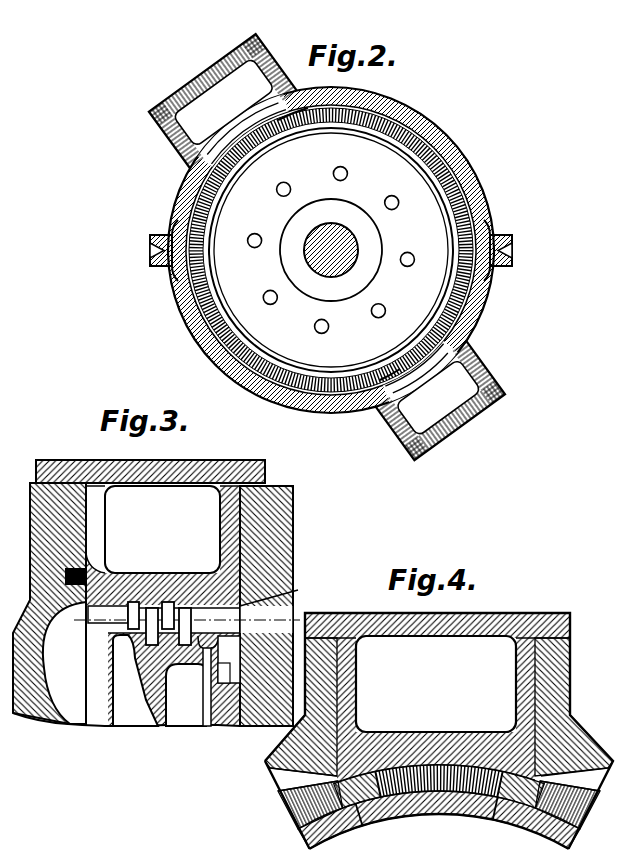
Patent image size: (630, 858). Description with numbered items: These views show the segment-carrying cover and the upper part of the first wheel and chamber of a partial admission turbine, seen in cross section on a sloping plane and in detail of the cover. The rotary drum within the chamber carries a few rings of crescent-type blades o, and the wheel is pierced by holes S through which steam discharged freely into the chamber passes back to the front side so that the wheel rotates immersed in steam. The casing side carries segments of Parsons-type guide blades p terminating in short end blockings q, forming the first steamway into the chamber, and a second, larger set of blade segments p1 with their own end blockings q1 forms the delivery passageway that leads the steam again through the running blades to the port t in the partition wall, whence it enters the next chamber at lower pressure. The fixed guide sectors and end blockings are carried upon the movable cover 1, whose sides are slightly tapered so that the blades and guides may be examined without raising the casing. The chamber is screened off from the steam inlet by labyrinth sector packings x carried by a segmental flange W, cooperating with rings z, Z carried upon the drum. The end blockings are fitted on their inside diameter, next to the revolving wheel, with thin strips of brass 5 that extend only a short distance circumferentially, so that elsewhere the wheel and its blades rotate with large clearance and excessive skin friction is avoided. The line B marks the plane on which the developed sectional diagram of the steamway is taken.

In FIG. 2, the movable cover 1 is at (207, 64).
In FIG. 3, the movable cover 1 is at (148, 466).
In FIG. 4, the movable cover 1 is at (517, 685).
In FIG. 2, the larger blade segments p1 is at (237, 123).
In FIG. 3, the larger blade segments p1 is at (157, 592).
In FIG. 4, the larger blade segments p1 is at (407, 757).
In FIG. 2, the end blockings q1 is at (278, 122).
In FIG. 4, the end blockings q1 is at (352, 765).
In FIG. 2, the rings of blades o is at (415, 152).
In FIG. 3, the rings of blades o is at (180, 592).
In FIG. 2, the holes S is at (266, 196).
In FIG. 2, the end blockings q is at (432, 326).
In FIG. 2, the segments of guide blades p is at (436, 395).
In FIG. 3, the labyrinth sector packings x is at (202, 592).
In FIG. 3, the port t is at (280, 585).
In FIG. 3, the section line B— B is at (254, 612).
In FIG. 3, the rings z is at (110, 628).
In FIG. 3, the rings Z is at (167, 664).
In FIG. 3, the segmental flange W is at (208, 670).
In FIG. 4, the thin strips of brass 5 is at (351, 803).